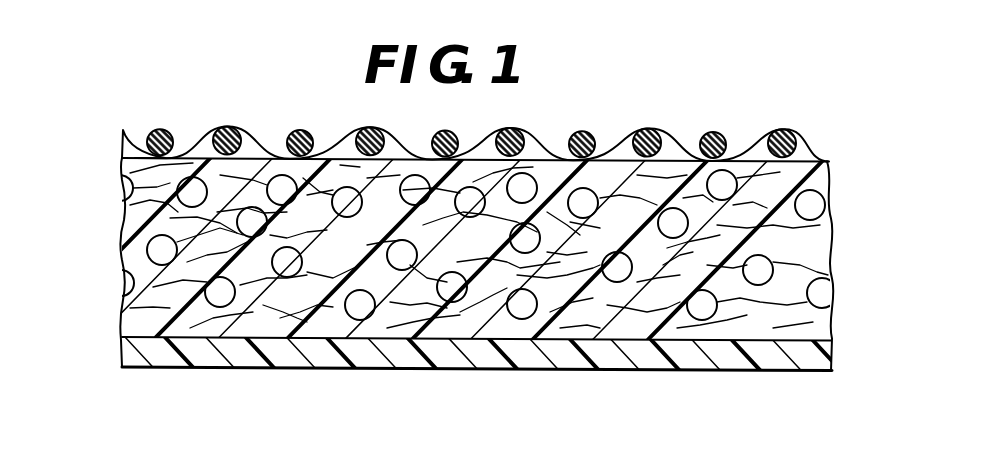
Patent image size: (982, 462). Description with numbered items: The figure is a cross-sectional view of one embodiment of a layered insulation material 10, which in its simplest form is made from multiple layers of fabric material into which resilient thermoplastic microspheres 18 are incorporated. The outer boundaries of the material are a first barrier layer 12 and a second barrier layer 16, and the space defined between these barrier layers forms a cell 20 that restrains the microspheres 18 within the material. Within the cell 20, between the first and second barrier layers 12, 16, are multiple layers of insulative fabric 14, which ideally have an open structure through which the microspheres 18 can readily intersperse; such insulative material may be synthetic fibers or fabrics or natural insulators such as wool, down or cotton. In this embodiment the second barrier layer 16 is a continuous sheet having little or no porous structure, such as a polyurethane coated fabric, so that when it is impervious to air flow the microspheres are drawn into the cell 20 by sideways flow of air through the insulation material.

The layered insulation material 10 is at (853, 132).
The first barrier layer 12 is at (136, 141).
The insulative fabric layer 14 is at (124, 207).
The second barrier layer 16 is at (122, 350).
The resilient thermoplastic microspheres 18 is at (545, 320).
The cell 20 is at (86, 160).